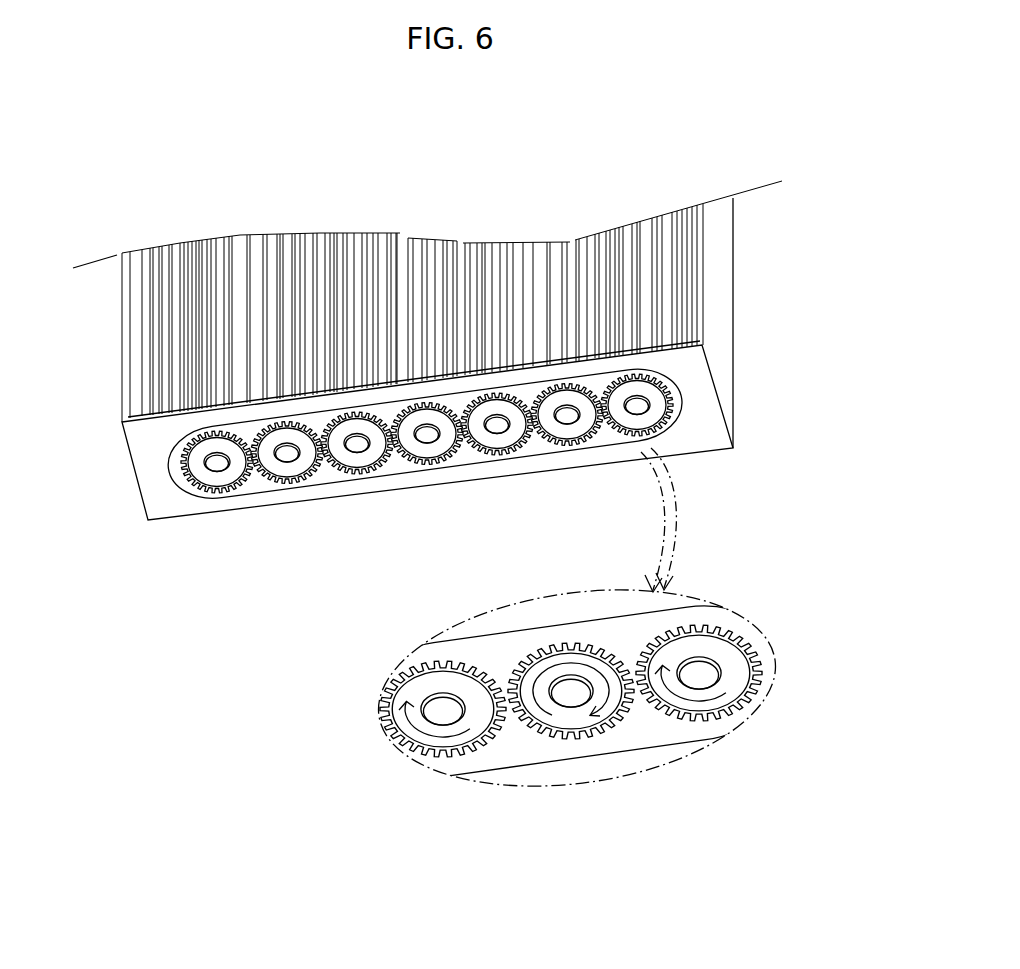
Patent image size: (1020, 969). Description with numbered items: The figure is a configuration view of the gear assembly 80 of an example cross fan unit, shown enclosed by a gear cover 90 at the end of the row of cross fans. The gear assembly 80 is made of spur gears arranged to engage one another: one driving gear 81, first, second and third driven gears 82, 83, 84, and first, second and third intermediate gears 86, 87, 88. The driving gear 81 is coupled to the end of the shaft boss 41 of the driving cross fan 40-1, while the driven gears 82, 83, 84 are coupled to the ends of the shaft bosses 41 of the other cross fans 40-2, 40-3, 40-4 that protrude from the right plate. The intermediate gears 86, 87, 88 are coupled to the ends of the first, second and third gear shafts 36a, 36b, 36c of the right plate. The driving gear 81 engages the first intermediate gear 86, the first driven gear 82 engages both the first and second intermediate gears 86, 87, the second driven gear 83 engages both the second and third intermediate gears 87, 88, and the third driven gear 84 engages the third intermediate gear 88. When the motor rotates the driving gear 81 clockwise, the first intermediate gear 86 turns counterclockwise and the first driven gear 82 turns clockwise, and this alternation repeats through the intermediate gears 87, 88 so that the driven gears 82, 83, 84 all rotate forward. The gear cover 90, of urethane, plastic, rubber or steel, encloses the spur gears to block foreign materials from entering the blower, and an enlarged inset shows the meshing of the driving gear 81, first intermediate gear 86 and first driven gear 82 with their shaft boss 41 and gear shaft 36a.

The driving cross fan 40-1 is at (663, 238).
The driven cross fan 40-2 is at (522, 257).
The driven cross fan 40-3 is at (362, 238).
The driven cross fan 40-4 is at (214, 272).
The shaft boss 41 is at (217, 462).
The gear assembly 80 is at (752, 417).
The driving gear 81 is at (657, 412).
The first driven gear 82 is at (503, 442).
The second driven gear 83 is at (366, 460).
The third driven gear 84 is at (220, 481).
The first intermediate gear 86 is at (550, 442).
The second intermediate gear 87 is at (414, 448).
The third intermediate gear 88 is at (280, 470).
The first gear shaft 36a is at (568, 418).
The second gear shaft 36b is at (428, 436).
The third gear shaft 36c is at (287, 455).
The gear cover 90 is at (170, 465).